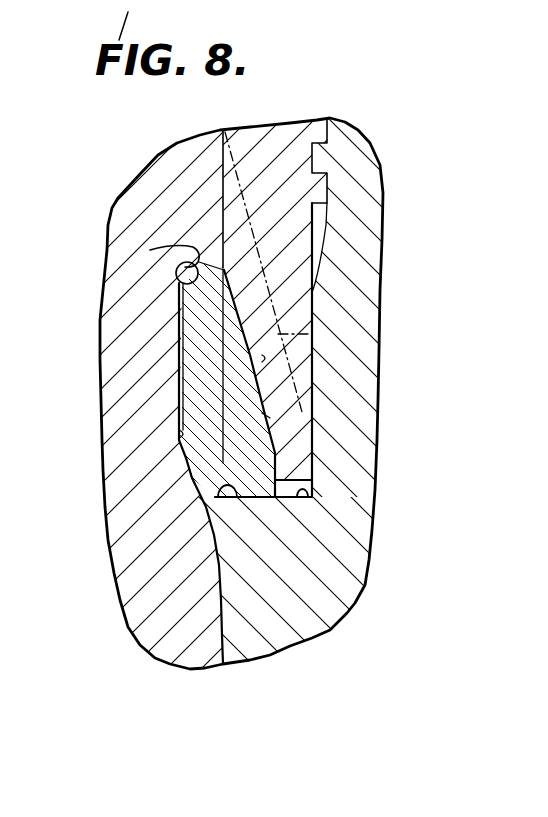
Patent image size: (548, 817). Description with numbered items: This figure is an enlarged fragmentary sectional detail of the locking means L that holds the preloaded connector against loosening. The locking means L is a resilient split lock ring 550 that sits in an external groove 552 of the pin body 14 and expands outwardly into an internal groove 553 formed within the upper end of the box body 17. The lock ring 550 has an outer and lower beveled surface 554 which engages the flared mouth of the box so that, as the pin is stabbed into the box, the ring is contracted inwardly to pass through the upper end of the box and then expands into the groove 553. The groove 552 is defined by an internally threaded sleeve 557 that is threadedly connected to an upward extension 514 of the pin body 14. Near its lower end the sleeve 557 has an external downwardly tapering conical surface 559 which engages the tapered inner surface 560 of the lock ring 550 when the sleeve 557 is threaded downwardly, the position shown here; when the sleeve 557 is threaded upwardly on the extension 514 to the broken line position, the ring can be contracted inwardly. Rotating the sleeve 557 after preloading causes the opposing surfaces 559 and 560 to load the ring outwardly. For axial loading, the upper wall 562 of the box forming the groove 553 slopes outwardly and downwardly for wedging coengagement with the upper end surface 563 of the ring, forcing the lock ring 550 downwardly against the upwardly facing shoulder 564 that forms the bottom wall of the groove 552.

The pin body 14 is at (285, 633).
The box body 17 is at (122, 603).
The upward extension of the pin body 514 is at (343, 137).
The split lock ring 550 is at (200, 335).
The external groove 552 is at (302, 491).
The internal groove 553 is at (178, 435).
The beveled surface 554 is at (191, 477).
The threaded sleeve 557 is at (255, 133).
The conical surface 559 is at (256, 351).
The tapered inner surface 560 is at (268, 418).
The upper wall 562 is at (178, 289).
The upper end surface 563 is at (150, 250).
The upwardly facing shoulder 564 is at (220, 490).
The locking means L is at (168, 381).